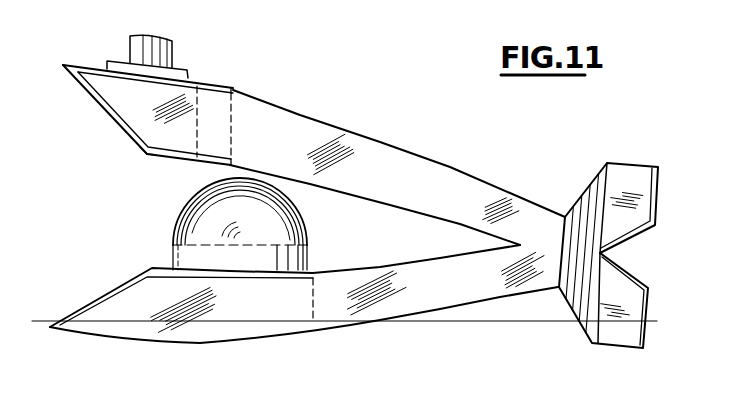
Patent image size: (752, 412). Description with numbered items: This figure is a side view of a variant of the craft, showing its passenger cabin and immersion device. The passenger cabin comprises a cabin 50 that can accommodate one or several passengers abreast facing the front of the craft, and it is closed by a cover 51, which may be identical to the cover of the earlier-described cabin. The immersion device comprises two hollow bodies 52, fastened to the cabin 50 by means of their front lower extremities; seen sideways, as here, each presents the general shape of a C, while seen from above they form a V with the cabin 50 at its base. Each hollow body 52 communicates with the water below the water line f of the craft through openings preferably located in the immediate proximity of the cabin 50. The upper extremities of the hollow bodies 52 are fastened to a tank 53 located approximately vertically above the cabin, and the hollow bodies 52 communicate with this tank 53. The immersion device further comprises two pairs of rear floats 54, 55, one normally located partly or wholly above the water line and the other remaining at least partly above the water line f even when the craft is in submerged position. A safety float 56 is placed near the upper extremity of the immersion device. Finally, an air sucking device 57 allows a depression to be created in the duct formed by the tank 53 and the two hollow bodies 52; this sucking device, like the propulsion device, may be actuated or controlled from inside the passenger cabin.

The cabin 50 is at (163, 270).
The cover 51 is at (197, 202).
The hollow bodies 52 is at (410, 193).
The tank 53 is at (101, 105).
The rear floats 54 is at (610, 337).
The rear floats 55 is at (623, 167).
The safety float 56 is at (157, 133).
The air sucking device 57 is at (160, 53).
The water line f is at (38, 320).